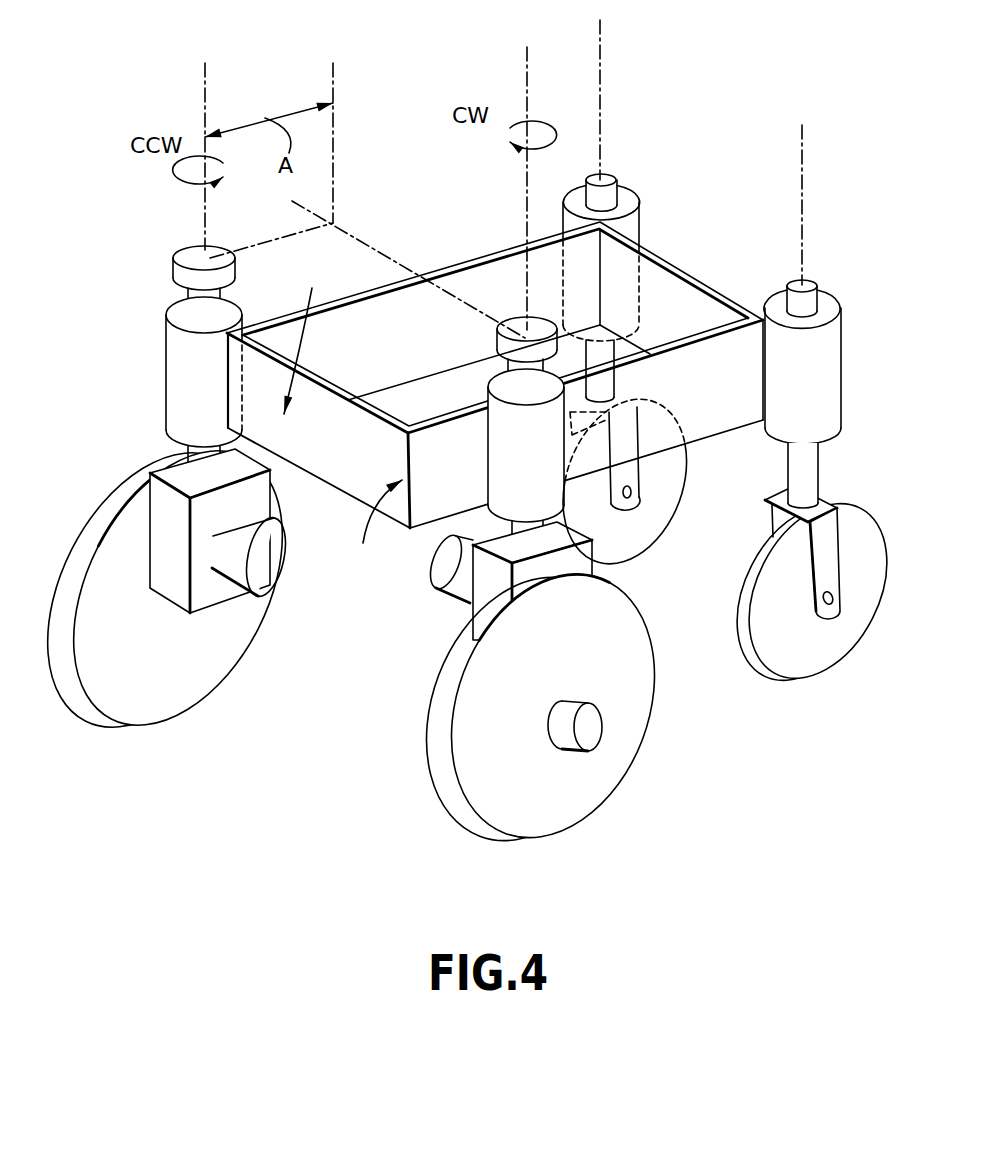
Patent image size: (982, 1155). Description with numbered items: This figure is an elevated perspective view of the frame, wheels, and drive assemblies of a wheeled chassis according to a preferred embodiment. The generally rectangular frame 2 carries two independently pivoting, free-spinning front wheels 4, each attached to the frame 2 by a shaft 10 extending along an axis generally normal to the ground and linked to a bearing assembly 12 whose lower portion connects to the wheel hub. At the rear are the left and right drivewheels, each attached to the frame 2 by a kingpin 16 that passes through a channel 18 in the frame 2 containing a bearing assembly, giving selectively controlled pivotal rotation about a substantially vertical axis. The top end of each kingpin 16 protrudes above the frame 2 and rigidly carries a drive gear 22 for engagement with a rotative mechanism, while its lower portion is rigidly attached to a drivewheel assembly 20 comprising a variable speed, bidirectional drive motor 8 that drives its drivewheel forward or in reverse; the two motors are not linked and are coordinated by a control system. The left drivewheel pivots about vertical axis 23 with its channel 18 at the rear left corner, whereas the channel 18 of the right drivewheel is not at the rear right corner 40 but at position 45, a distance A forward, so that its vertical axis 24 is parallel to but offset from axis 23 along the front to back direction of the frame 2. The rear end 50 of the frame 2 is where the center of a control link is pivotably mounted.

The frame 2 is at (450, 267).
The wheel 4 is at (648, 538).
The drive motor 8 is at (455, 567).
The shaft 10 is at (800, 467).
The bearing assembly 12 is at (827, 500).
The kingpin 16 is at (207, 463).
The channel 18 is at (185, 365).
The drivewheel assembly 20 is at (180, 473).
The drive gear 22 is at (207, 262).
The vertical axis 23 is at (205, 110).
The vertical axis 24 is at (527, 75).
The rear right corner 40 is at (374, 528).
The position 45 is at (542, 462).
The rear end 50 is at (312, 336).